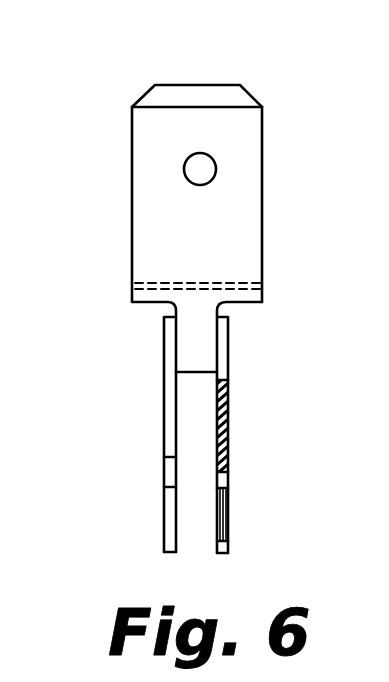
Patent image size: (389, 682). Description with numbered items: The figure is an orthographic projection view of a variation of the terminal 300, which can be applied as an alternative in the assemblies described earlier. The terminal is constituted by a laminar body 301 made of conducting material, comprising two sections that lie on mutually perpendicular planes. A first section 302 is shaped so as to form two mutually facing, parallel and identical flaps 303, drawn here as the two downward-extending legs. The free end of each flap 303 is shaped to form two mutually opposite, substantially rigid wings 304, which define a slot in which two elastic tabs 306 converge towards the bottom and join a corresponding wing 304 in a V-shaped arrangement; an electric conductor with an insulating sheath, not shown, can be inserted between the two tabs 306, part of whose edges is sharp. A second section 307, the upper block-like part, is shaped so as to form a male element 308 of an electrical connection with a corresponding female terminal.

The terminal 300 is at (243, 352).
The laminar body 301 is at (131, 166).
The first section 302 is at (161, 379).
The flap 303 is at (162, 409).
The wing 304 is at (163, 503).
The elastic tab 306 is at (229, 513).
The second section 307 is at (255, 138).
The male element 308 is at (175, 118).